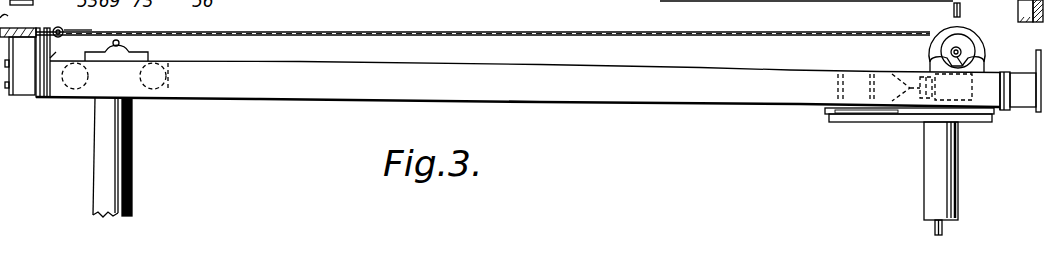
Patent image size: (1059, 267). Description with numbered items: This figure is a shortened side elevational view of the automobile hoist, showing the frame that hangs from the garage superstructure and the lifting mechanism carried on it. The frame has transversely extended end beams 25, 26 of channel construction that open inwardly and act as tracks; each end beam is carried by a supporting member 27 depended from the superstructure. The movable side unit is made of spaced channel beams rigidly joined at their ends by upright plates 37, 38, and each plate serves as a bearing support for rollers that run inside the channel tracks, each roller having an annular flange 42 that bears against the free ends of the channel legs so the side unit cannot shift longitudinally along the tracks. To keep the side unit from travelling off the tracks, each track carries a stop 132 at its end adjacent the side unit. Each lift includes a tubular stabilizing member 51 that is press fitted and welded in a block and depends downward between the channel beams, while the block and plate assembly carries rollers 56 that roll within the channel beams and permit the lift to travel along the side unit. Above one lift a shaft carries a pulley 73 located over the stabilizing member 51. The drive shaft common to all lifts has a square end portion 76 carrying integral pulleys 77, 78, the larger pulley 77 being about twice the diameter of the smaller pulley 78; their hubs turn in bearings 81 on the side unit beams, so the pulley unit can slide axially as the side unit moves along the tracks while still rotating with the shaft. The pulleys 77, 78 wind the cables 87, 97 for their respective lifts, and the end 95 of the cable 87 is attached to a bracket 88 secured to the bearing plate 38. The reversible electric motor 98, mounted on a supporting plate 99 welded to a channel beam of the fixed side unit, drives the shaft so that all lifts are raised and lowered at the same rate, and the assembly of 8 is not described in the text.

The castor assembly 8 is at (950, 23).
The end beam 25 is at (1053, 118).
The end beam 26 is at (23, 90).
The supporting member 27 is at (1040, 31).
The upright plate 37 is at (1003, 108).
The upright plate 38 is at (50, 93).
The annular flange 42 is at (48, 58).
The tubular stabilizing member 51 is at (129, 161).
The roller 56 is at (175, 56).
The pulley 73 is at (116, 47).
The end portion 76 is at (931, 42).
The pulley 77 is at (952, 52).
The pulley 78 is at (953, 87).
The bearing 81 is at (969, 2).
The cable 87 is at (453, 31).
The bracket 88 is at (43, 28).
The end of the cable 95 is at (88, 31).
The cable 97 is at (950, 227).
The electric motor 98 is at (832, 110).
The supporting plate 99 is at (856, 117).
The stop 132 is at (1023, 18).